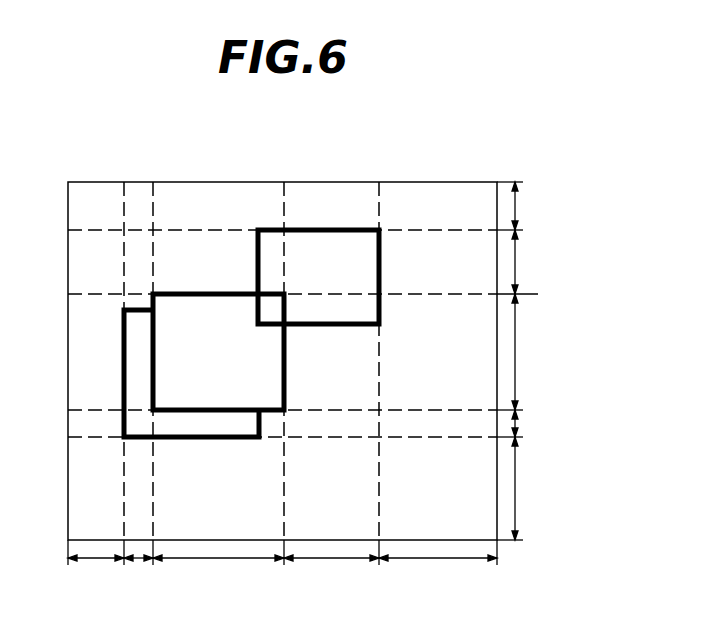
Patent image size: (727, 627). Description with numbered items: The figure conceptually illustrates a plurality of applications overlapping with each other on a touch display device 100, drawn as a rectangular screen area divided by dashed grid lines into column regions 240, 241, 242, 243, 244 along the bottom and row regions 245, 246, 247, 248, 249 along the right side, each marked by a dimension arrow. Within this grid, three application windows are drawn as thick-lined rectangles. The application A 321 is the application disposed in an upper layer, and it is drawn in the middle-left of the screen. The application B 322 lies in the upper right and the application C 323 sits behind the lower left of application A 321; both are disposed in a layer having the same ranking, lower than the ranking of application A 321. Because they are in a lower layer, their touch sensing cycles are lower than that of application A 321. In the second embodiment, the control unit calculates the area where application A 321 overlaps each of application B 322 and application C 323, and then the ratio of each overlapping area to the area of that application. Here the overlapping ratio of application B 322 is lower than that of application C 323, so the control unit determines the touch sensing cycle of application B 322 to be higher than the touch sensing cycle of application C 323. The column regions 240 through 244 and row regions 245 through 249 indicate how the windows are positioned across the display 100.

The substrate 100 is at (413, 368).
The application A 321 is at (218, 352).
The application B 322 is at (318, 277).
The application C 323 is at (198, 425).
The first column region 240 is at (96, 576).
The second column region 241 is at (142, 576).
The third column region 242 is at (218, 575).
The fourth column region 243 is at (331, 576).
The fifth column region 244 is at (438, 575).
The first row region 245 is at (541, 206).
The second row region 246 is at (541, 262).
The third row region 247 is at (541, 352).
The fourth row region 248 is at (455, 426).
The fifth row region 249 is at (541, 488).